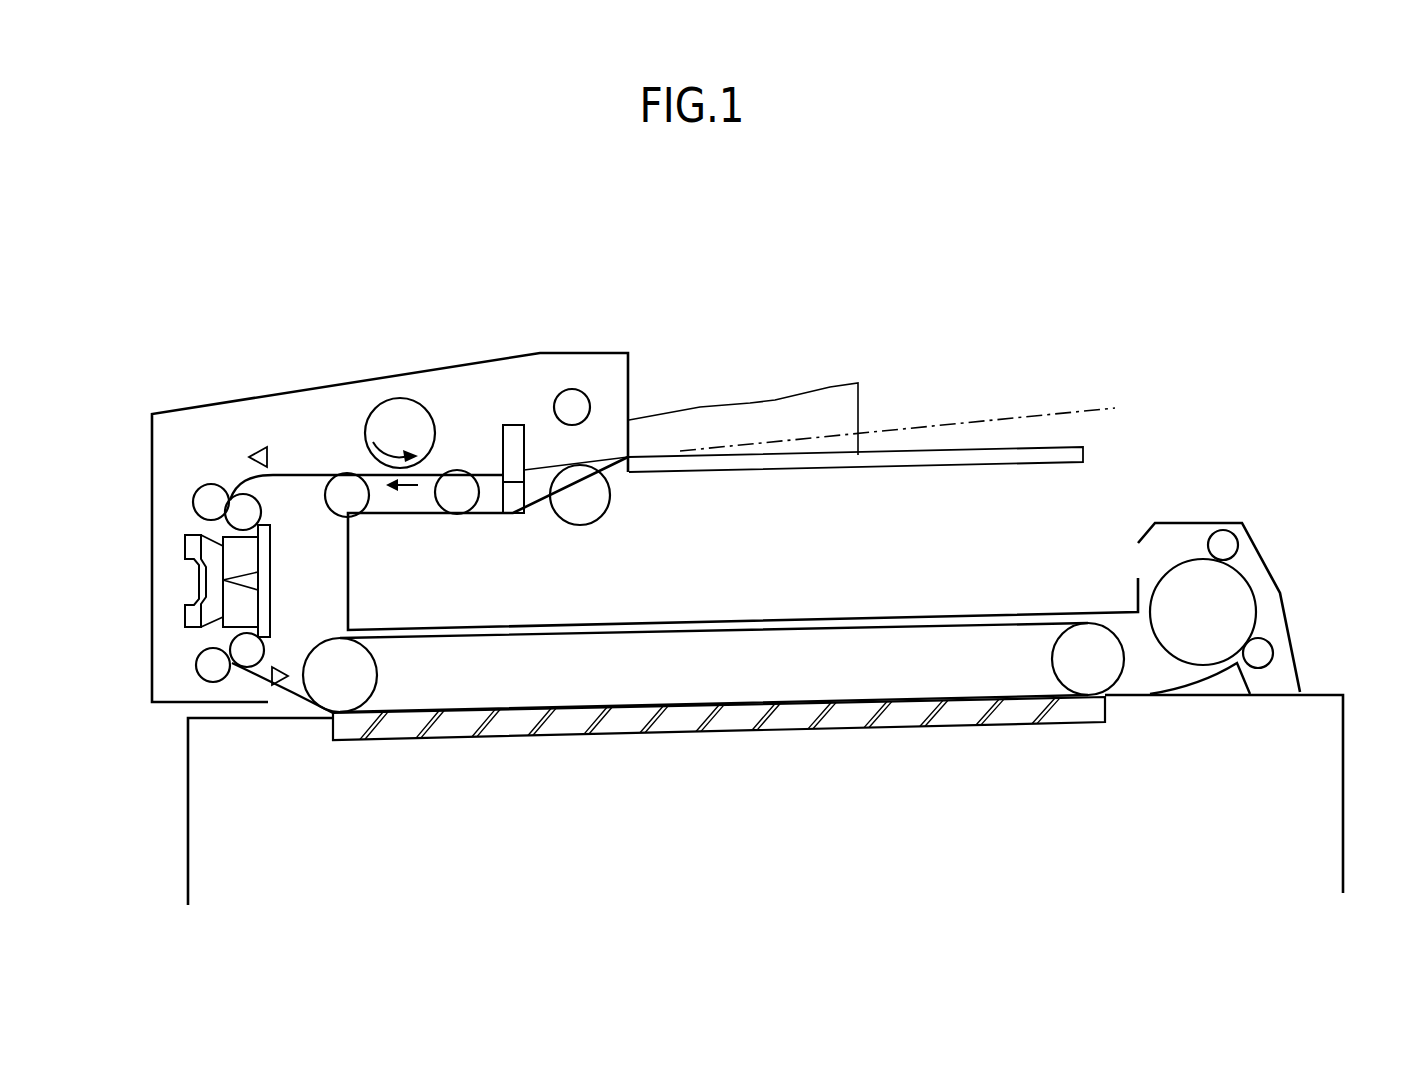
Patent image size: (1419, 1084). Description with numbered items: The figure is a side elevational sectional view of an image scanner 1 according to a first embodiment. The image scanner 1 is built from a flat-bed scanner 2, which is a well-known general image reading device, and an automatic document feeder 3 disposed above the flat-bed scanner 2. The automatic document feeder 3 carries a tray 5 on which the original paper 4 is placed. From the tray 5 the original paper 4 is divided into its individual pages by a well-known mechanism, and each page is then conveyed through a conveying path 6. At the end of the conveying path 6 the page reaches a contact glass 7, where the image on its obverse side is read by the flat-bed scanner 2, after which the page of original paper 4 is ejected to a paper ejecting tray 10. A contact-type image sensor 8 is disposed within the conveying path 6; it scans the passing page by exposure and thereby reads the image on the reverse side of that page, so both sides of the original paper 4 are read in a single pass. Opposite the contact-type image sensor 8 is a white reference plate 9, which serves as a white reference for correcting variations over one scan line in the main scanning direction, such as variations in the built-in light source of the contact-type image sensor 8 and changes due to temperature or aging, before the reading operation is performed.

The image scanner 1 is at (1068, 238).
The flat-bed scanner 2 is at (1375, 792).
The automatic document feeder 3 is at (860, 374).
The original paper 4 is at (1033, 413).
The tray 5 is at (978, 465).
The conveying path 6 is at (298, 476).
The contact glass 7 is at (476, 741).
The contact-type image sensor 8 is at (272, 581).
The white reference plate 9 is at (203, 578).
The paper ejecting tray 10 is at (1072, 610).